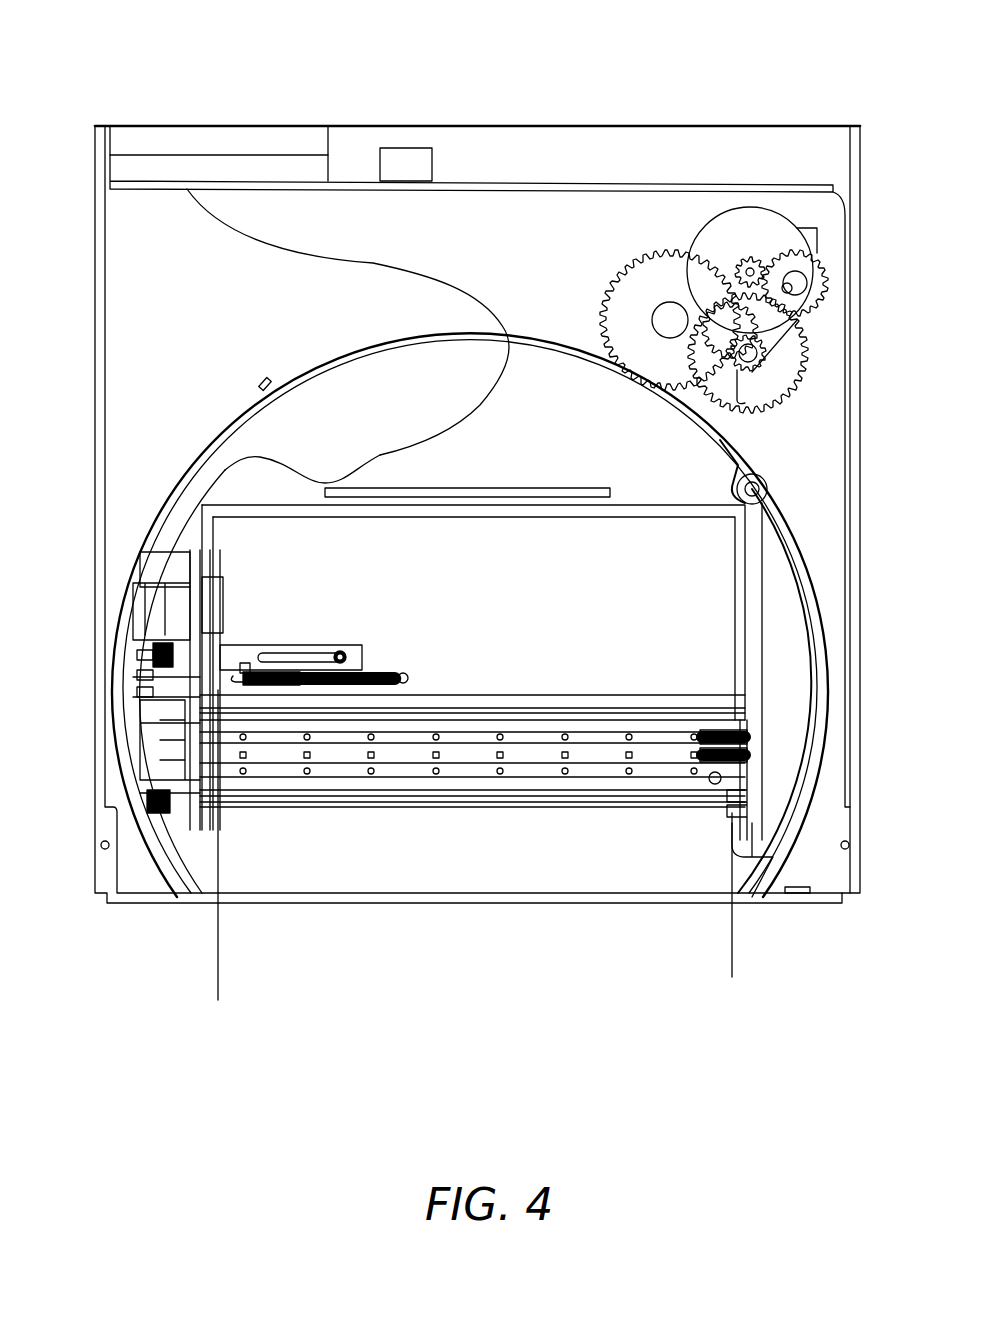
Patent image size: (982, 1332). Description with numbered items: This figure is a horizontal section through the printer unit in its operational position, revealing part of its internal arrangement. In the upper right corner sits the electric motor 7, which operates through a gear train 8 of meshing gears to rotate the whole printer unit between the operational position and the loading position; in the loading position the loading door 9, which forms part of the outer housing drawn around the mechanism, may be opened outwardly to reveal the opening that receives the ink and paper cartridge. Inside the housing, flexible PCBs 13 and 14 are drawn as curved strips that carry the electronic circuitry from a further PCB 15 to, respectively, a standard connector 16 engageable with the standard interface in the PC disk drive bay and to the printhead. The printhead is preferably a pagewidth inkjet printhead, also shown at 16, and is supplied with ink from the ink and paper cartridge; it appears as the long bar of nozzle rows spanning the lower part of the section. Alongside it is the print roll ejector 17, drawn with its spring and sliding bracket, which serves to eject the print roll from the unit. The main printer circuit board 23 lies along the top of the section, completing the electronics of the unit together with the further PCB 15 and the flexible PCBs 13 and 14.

The electric motor 7 is at (748, 227).
The gear train 8 is at (810, 365).
The loading door 9 is at (816, 653).
The flexible PCB 13 is at (373, 263).
The flexible PCB 14 is at (237, 462).
The further PCB 15 is at (528, 485).
The standard connector 16 is at (250, 137).
The print roll ejector 17 is at (258, 683).
The main printer circuit board 23 is at (524, 184).